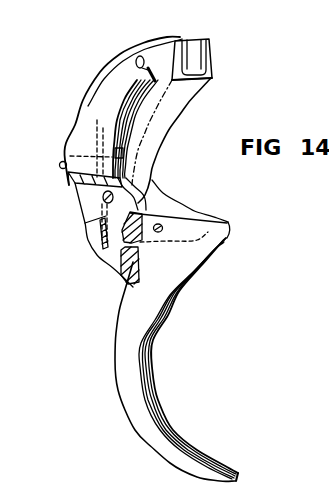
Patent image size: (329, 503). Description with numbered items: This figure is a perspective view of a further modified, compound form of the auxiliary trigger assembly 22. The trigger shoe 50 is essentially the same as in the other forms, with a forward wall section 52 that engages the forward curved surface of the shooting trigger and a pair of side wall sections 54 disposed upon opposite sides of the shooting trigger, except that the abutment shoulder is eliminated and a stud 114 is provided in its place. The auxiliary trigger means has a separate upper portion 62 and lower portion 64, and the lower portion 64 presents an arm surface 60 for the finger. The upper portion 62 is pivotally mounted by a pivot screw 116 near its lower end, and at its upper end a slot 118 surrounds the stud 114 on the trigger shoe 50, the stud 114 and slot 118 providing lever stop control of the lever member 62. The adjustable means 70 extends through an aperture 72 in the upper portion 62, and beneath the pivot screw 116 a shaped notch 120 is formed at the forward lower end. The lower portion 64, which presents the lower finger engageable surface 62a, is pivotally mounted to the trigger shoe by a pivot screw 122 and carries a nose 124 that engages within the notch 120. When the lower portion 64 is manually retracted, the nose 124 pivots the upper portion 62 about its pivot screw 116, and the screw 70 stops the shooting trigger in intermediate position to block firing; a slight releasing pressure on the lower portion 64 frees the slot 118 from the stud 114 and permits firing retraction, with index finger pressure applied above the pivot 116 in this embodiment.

The auxiliary means 22 is at (122, 440).
The trigger shoe 50 is at (174, 135).
The forward wall section 52 is at (167, 93).
The side wall sections 54 is at (208, 43).
The arm surface 60 is at (172, 358).
The upper portion 62 is at (95, 108).
The lower finger engageable surface 62a is at (213, 75).
The lower portion 64 is at (150, 390).
The adjustable means 70 is at (59, 164).
The aperture 72 is at (123, 155).
The stud 114 is at (148, 50).
The pivot screw 116 is at (102, 198).
The slot 118 is at (136, 63).
The shaped notch 120 is at (103, 247).
The pivot screw 122 is at (163, 224).
The nose 124 is at (142, 217).